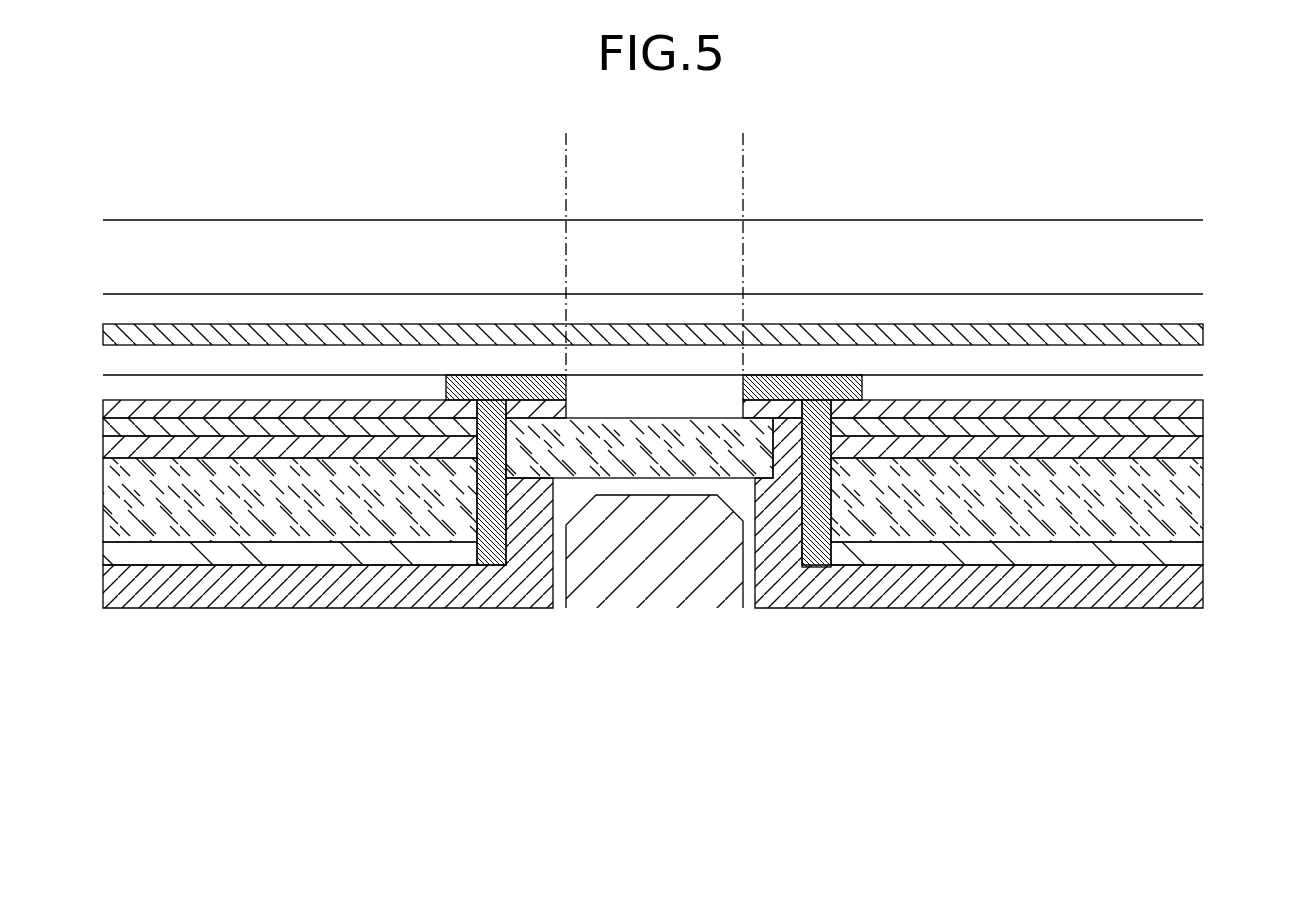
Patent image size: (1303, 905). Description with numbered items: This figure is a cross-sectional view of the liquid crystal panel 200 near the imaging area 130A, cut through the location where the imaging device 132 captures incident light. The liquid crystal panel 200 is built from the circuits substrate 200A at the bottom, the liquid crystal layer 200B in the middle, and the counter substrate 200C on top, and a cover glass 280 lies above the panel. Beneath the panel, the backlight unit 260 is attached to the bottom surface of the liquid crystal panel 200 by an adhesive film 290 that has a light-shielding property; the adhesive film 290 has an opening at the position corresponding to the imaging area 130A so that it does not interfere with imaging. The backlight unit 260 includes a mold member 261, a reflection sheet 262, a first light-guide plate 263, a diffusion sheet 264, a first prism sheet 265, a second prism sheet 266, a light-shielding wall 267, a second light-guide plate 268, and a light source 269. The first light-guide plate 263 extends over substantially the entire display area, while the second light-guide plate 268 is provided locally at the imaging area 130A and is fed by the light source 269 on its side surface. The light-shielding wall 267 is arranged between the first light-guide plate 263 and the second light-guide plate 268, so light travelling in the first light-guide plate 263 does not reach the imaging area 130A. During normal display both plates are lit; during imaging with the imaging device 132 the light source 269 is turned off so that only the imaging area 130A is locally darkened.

The imaging area 130A is at (729, 179).
The imaging device 132 is at (660, 592).
The liquid crystal panel 200 is at (669, 335).
The circuits substrate 200A is at (1200, 362).
The liquid crystal layer 200B is at (1200, 334).
The counter substrate 200C is at (1200, 305).
The backlight unit 260 is at (665, 531).
The mold member 261 is at (695, 538).
The reflection sheet 262 is at (1200, 552).
The first light-guide plate 263 is at (1192, 496).
The diffusion sheet 264 is at (1197, 450).
The first prism sheet 265 is at (1200, 432).
The second prism sheet 266 is at (1200, 412).
The light-shielding wall 267 is at (827, 570).
The second light-guide plate 268 is at (610, 464).
The light source 269 is at (787, 468).
The cover glass 280 is at (1133, 232).
The adhesive film 290 is at (862, 389).